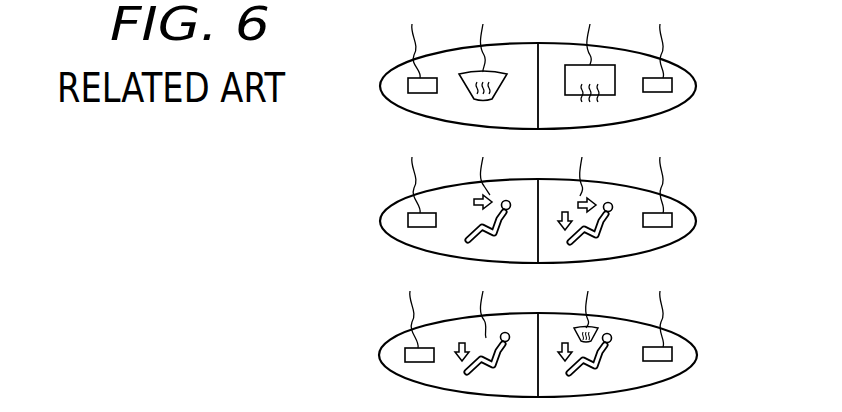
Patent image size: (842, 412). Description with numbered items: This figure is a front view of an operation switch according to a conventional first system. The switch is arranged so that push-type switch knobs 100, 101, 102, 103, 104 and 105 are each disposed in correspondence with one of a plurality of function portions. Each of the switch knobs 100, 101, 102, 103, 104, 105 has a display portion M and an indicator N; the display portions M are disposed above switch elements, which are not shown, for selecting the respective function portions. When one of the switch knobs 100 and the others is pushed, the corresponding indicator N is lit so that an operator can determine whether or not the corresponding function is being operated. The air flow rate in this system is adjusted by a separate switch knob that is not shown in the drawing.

The push-type switch knob 100 is at (537, 65).
The push-type switch knob 101 is at (537, 198).
The push-type switch knob 102 is at (537, 332).
The push-type switch knob 103 is at (380, 86).
The push-type switch knob 104 is at (380, 221).
The push-type switch knob 105 is at (378, 355).